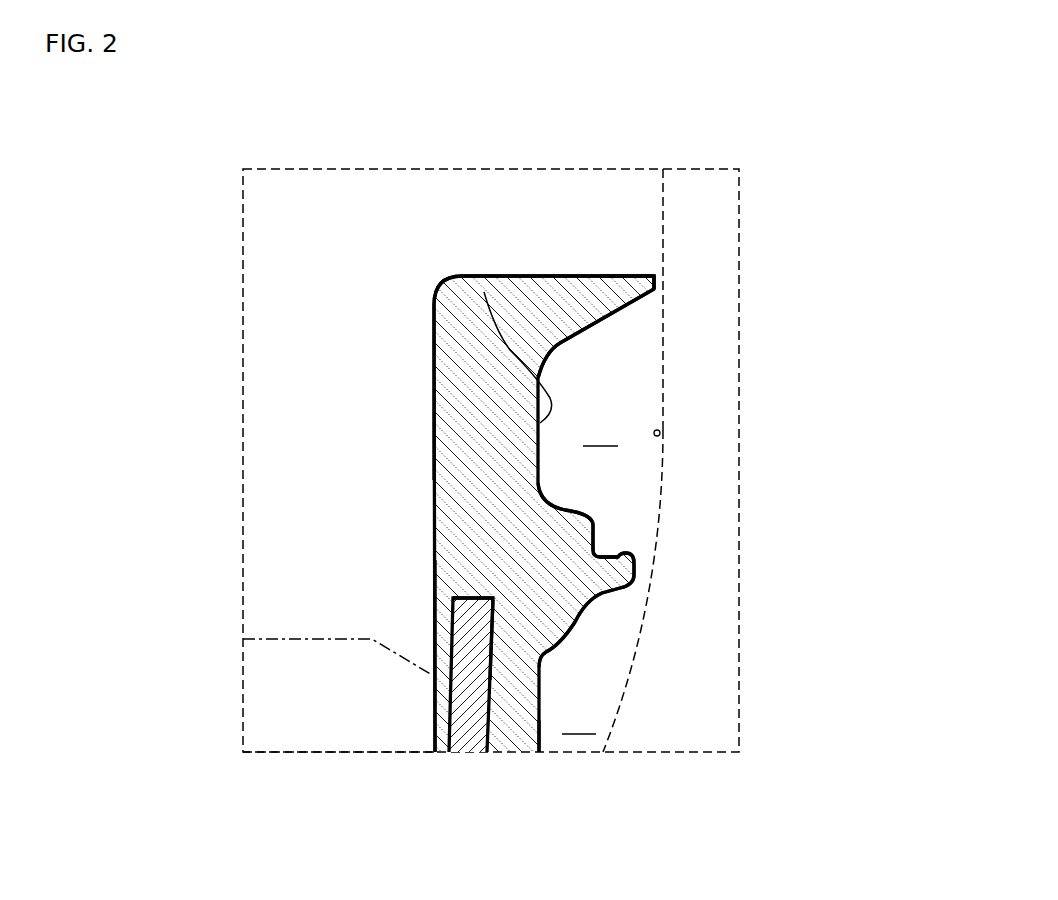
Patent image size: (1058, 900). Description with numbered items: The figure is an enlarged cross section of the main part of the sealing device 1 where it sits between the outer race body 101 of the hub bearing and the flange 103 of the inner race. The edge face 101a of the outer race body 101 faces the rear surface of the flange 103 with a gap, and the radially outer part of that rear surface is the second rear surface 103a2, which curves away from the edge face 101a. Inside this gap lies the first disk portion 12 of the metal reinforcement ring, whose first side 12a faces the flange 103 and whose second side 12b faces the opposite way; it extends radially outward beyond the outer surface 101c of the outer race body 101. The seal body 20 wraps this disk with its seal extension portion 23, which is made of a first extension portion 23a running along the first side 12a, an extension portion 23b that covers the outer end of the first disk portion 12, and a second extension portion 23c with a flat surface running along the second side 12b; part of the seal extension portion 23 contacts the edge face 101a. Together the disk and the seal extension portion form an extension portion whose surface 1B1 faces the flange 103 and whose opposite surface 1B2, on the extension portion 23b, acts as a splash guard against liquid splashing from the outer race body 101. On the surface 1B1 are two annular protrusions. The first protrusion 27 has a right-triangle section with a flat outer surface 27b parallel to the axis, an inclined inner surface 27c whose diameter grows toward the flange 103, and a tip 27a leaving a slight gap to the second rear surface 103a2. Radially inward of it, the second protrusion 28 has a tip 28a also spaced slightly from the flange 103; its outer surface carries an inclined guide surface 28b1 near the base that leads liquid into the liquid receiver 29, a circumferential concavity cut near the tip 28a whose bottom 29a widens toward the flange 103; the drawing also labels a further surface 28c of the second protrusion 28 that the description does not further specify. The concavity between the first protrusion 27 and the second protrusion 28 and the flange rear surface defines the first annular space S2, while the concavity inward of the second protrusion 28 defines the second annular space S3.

The sealing device 1 is at (384, 208).
The surface of the seal extension portion 1B1 is at (484, 292).
The surface opposite the surface 1B1 1B2 is at (434, 333).
The seal body 20 is at (535, 262).
The first protrusion 27 is at (628, 321).
The tip of the first protrusion 27a is at (656, 278).
The outer surface of the first protrusion 27b is at (590, 275).
The inner surface of the first protrusion 27c is at (585, 337).
The flange 103 is at (722, 280).
The second rear surface 103a2 is at (661, 431).
The seal extension portion 23 is at (424, 451).
The first extension portion 23a is at (518, 733).
The extension portion 23b is at (457, 372).
The second extension portion 23c is at (442, 647).
The first disk portion 12 is at (490, 725).
The first side of the first disk portion 12a is at (490, 677).
The second side of the first disk portion 12b is at (436, 602).
The outer race body 101 is at (268, 700).
The edge face 101a is at (437, 730).
The outer surface of the outer race body 101c is at (280, 633).
The second protrusion 28 is at (624, 595).
The tip of the second protrusion 28a is at (634, 567).
The guide surface 28b1 is at (565, 503).
The lower fillet portion 28c is at (573, 612).
The liquid receiver 29 is at (608, 528).
The bottom of the liquid receiver 29a is at (615, 553).
The first annular space S2 is at (600, 431).
The second annular space S3 is at (579, 719).